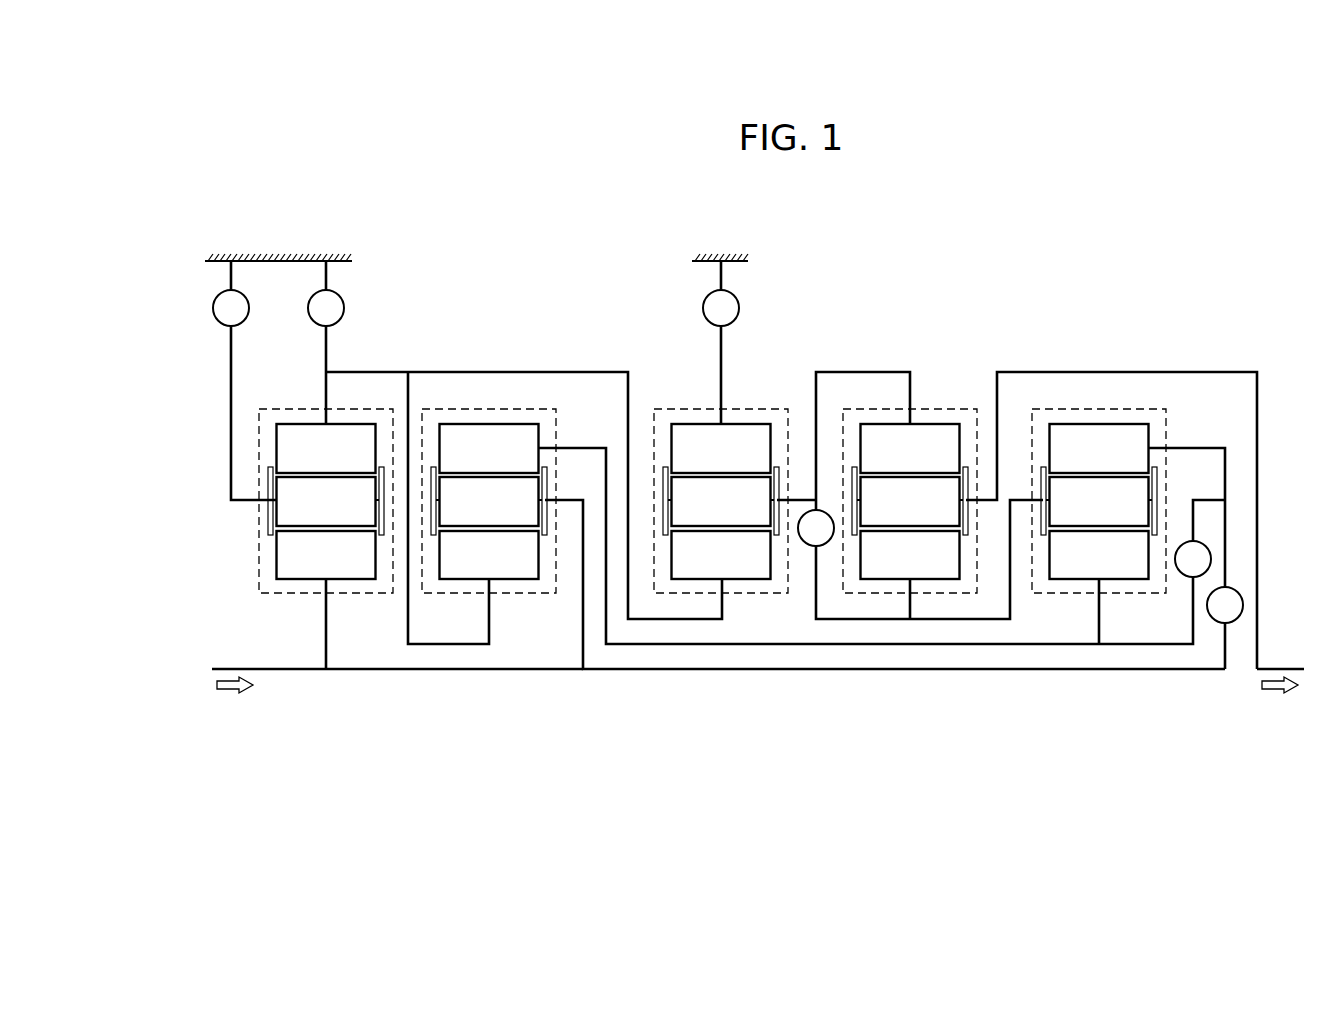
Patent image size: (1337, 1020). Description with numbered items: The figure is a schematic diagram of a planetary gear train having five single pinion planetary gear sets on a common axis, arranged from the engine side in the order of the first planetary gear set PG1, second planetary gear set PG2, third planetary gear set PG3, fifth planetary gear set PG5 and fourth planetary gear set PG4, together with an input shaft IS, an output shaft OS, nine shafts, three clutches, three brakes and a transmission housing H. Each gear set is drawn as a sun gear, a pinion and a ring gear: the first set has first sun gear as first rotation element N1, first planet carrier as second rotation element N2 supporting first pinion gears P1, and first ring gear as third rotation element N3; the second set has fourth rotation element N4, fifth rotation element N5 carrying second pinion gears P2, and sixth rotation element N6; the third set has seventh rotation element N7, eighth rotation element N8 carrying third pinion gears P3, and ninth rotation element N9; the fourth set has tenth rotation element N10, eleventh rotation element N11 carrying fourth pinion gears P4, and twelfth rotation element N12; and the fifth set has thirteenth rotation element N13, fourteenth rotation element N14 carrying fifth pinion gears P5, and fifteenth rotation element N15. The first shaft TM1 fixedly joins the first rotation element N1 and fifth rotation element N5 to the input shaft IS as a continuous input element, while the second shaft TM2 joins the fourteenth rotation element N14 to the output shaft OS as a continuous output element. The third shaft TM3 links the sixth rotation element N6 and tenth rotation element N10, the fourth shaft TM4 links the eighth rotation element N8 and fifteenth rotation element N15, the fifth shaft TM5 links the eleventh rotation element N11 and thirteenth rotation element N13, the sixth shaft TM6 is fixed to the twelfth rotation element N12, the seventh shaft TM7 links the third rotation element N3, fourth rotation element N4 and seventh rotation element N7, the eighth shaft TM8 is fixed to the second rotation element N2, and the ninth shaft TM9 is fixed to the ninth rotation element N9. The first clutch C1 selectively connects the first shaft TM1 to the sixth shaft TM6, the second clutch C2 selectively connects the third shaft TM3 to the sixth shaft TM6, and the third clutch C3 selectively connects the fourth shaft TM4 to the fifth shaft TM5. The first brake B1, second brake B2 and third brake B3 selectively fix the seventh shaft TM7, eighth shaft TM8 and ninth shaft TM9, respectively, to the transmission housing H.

The first planetary gear set PG1 is at (297, 575).
The second planetary gear set PG2 is at (517, 561).
The third planetary gear set PG3 is at (709, 541).
The fourth planetary gear set PG4 is at (1133, 565).
The fifth planetary gear set PG5 is at (920, 531).
The first rotation element N1 is at (326, 555).
The second rotation element N2 is at (268, 518).
The third rotation element N3 is at (326, 448).
The fourth rotation element N4 is at (489, 555).
The fifth rotation element N5 is at (522, 458).
The sixth rotation element N6 is at (489, 448).
The seventh rotation element N7 is at (721, 555).
The eighth rotation element N8 is at (705, 438).
The ninth rotation element N9 is at (721, 448).
The tenth rotation element N10 is at (1099, 555).
The eleventh rotation element N11 is at (1157, 478).
The twelfth rotation element N12 is at (1099, 448).
The thirteenth rotation element N13 is at (910, 555).
The fourteenth rotation element N14 is at (925, 428).
The fifteenth rotation element N15 is at (910, 448).
The first pinion gears P1 is at (326, 501).
The second pinion gears P2 is at (489, 501).
The third pinion gears P3 is at (721, 501).
The fourth pinion gears P4 is at (1099, 501).
The fifth pinion gears P5 is at (910, 501).
The first shaft TM1 is at (625, 670).
The second shaft TM2 is at (1127, 371).
The third shaft TM3 is at (807, 645).
The fourth shaft TM4 is at (864, 371).
The fifth shaft TM5 is at (970, 620).
The sixth shaft TM6 is at (1226, 472).
The seventh shaft TM7 is at (445, 371).
The eighth shaft TM8 is at (232, 372).
The ninth shaft TM9 is at (722, 348).
The first brake B1 is at (326, 293).
The second brake B2 is at (231, 293).
The third brake B3 is at (721, 293).
The first clutch C1 is at (1225, 605).
The second clutch C2 is at (1193, 559).
The third clutch C3 is at (816, 528).
The input shaft IS is at (228, 668).
The output shaft OS is at (1278, 668).
The transmission housing H is at (280, 260).